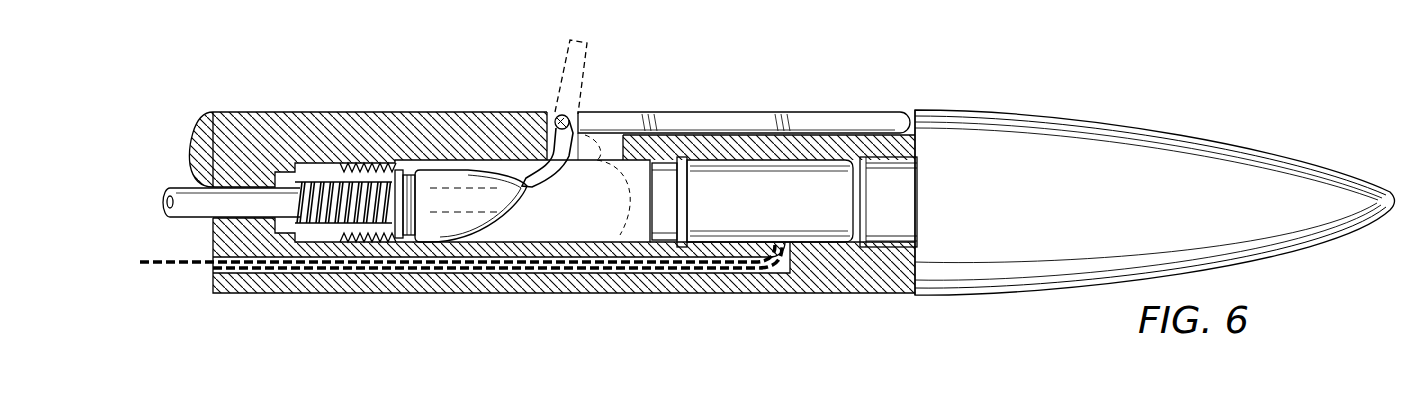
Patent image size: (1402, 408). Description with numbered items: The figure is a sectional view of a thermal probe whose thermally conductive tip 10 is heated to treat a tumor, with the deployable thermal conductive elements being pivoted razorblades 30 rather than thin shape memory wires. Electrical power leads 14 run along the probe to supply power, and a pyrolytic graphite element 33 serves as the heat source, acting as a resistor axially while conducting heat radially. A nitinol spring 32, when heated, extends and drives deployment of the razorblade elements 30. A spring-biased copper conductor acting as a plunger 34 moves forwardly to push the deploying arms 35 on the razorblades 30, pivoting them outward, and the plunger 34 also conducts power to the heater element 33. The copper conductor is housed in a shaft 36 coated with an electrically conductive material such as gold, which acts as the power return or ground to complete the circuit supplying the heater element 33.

The thermally conductive tip 10 is at (1270, 162).
The electrical power leads 14 is at (318, 272).
The pivoted razorblades 30 is at (570, 40).
The nitinol spring 32 is at (348, 165).
The pyrolytic graphite element 33 is at (832, 208).
The plunger 34 is at (478, 182).
The deploying arms 35 is at (550, 133).
The shaft 36 is at (803, 280).